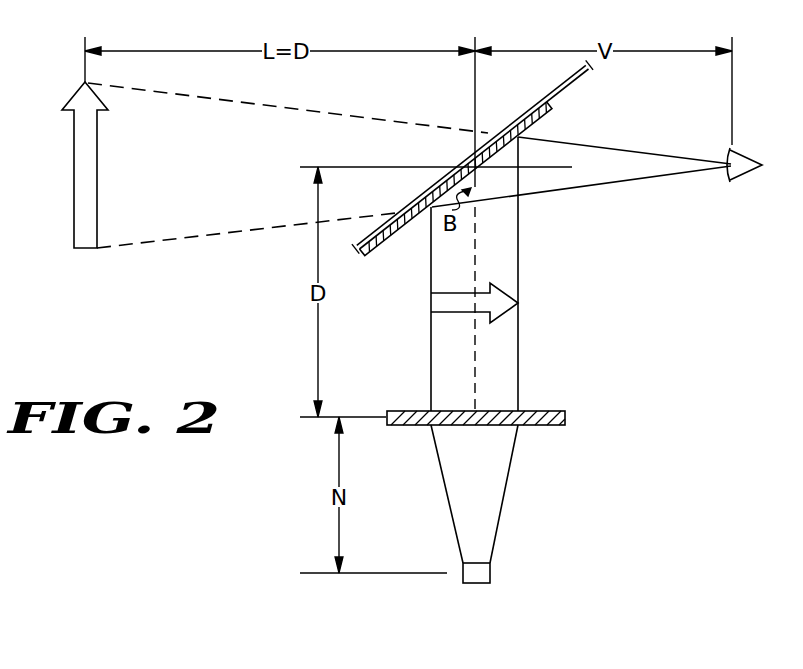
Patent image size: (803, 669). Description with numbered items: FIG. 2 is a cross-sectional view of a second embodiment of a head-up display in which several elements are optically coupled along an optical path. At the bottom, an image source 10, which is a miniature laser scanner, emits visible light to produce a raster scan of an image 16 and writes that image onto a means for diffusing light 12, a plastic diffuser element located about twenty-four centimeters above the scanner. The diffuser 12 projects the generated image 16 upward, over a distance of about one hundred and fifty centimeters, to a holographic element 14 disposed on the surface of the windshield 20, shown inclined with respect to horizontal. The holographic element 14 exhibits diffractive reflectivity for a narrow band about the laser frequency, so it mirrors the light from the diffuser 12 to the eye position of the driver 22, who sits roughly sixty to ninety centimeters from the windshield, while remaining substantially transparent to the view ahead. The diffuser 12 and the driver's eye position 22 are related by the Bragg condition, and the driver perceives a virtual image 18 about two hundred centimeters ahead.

The image source 10 is at (490, 572).
The means for diffusing light 12 is at (565, 418).
The holographic element 14 is at (542, 117).
The image 16 is at (429, 303).
The virtual image 18 is at (73, 232).
The windshield 20 is at (558, 86).
The driver 22 is at (748, 157).